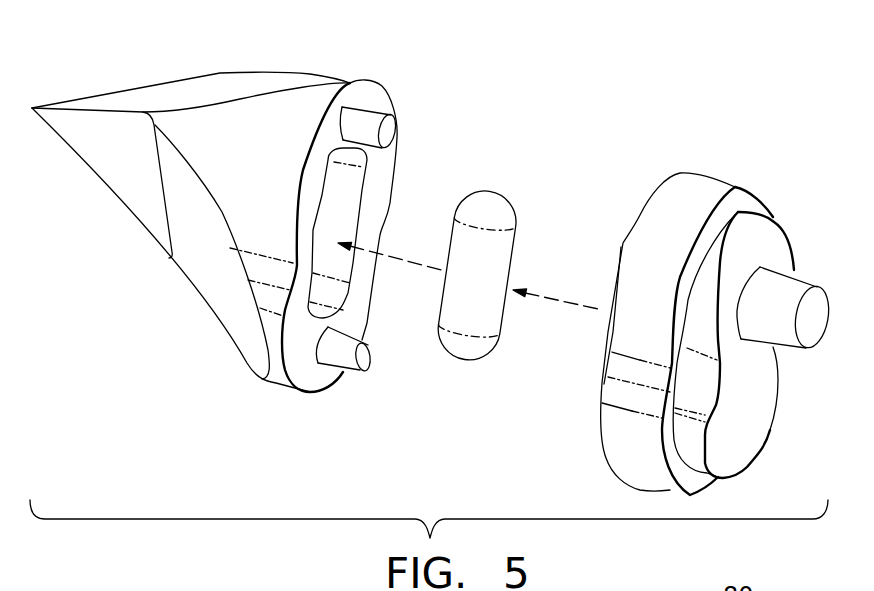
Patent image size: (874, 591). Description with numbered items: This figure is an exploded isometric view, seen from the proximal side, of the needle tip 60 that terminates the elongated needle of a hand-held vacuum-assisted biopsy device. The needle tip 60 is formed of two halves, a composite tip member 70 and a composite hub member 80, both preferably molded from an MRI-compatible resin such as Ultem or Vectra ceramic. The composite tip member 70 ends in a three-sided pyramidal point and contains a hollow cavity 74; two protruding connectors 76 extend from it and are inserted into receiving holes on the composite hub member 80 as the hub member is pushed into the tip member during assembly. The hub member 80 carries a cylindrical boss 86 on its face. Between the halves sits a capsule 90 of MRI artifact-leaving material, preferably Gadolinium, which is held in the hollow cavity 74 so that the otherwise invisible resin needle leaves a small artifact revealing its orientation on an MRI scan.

The needle tip 60 is at (490, 115).
The composite tip member 70 is at (167, 75).
The hollow cavity 74 is at (355, 178).
The protruding connectors 76 is at (367, 122).
The composite hub member 80 is at (727, 133).
The cylindrical boss 86 is at (782, 290).
The capsule 90 is at (503, 185).